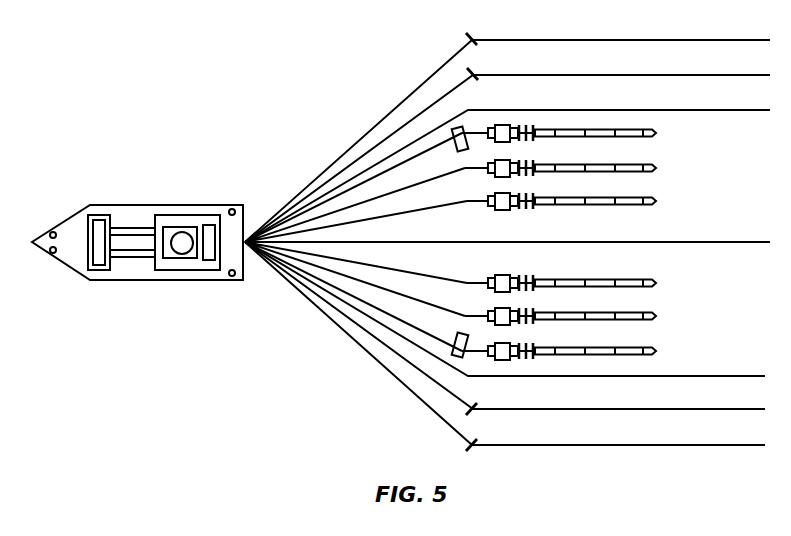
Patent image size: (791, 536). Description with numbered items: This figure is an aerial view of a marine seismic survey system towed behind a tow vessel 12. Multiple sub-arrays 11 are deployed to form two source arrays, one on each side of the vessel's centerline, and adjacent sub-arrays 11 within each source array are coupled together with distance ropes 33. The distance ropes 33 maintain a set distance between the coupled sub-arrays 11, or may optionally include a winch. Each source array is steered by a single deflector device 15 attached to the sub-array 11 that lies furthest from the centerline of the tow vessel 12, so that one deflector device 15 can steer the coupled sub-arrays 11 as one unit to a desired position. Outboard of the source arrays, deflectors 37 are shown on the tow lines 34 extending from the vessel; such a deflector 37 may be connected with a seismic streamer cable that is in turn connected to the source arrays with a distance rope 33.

The tow vessel 12 is at (98, 206).
The sub-array 11 is at (656, 133).
The distance rope 33 is at (420, 211).
The tow line 34 is at (613, 39).
The deflector 37 is at (471, 35).
The deflector device 15 is at (450, 132).